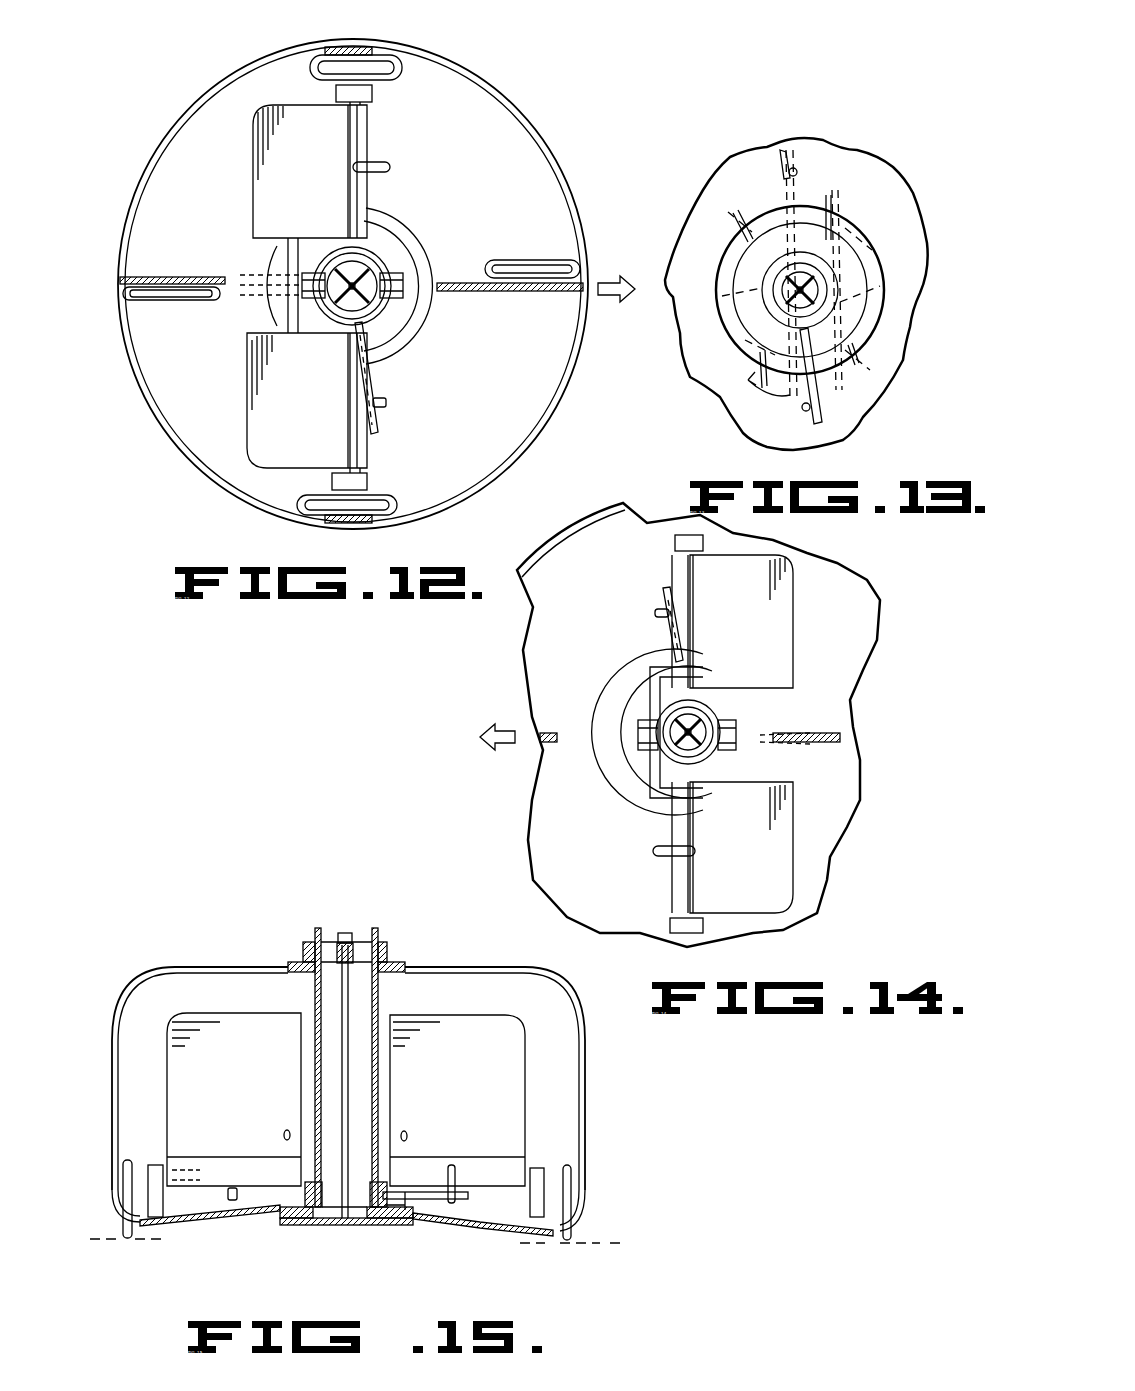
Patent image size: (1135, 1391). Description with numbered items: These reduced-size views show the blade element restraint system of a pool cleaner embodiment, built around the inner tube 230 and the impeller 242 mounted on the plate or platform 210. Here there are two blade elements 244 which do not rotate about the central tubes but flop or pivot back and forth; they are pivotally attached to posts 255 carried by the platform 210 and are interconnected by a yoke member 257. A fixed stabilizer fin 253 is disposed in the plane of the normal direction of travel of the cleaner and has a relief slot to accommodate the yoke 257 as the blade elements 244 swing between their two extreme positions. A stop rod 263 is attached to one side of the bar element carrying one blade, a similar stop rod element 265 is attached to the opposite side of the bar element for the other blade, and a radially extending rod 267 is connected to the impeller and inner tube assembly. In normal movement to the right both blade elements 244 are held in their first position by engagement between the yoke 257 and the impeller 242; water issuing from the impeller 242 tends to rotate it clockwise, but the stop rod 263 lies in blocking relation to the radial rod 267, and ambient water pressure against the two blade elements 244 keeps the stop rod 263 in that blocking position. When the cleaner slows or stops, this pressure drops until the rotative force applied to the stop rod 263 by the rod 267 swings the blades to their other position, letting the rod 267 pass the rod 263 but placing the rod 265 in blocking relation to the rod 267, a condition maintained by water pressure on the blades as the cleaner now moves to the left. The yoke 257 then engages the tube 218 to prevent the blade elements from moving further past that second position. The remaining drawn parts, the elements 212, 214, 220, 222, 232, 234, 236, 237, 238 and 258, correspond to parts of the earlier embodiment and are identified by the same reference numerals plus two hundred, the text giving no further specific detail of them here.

In FIG. 12, the plate or platform 210 is at (512, 407).
In FIG. 14, the plate or platform 210 is at (872, 655).
In FIG. 15, the plate or platform 210 is at (200, 1226).
In FIG. 12, the bracket slot 212 is at (555, 268).
In FIG. 15, the bracket slot 212 is at (575, 1230).
In FIG. 12, the housing rim slot 214 is at (372, 52).
In FIG. 15, the housing rim slot 214 is at (465, 970).
In FIG. 12, the tube 218 is at (358, 248).
In FIG. 15, the tube 218 is at (315, 930).
In FIG. 12, the arcuate guide 220 is at (336, 323).
In FIG. 14, the arcuate guide 220 is at (632, 740).
In FIG. 12, the clamp block 222 is at (395, 300).
In FIG. 14, the clamp block 222 is at (738, 750).
In FIG. 12, the inner tube 230 is at (372, 265).
In FIG. 13, the inner tube 230 is at (818, 300).
In FIG. 15, the inner tube 230 is at (314, 1058).
In FIG. 15, the fastener 232 is at (345, 930).
In FIG. 15, the base hub 234 is at (358, 1226).
In FIG. 15, the inner rod 236 is at (350, 1012).
In FIG. 15, the cap flange 237 is at (355, 935).
In FIG. 12, the spoked wheel 238 is at (340, 258).
In FIG. 14, the spoked wheel 238 is at (705, 715).
In FIG. 13, the impeller 242 is at (745, 335).
In FIG. 15, the impeller 242 is at (420, 1228).
In FIG. 12, the blade elements 244 is at (318, 172).
In FIG. 14, the blade elements 244 is at (785, 635).
In FIG. 15, the blade elements 244 is at (250, 1012).
In FIG. 12, the fixed stabilizer fin 253 is at (462, 280).
In FIG. 12, the posts 255 is at (374, 94).
In FIG. 14, the posts 255 is at (675, 543).
In FIG. 15, the posts 255 is at (150, 1168).
In FIG. 12, the yoke member 257 is at (286, 252).
In FIG. 14, the yoke member 257 is at (655, 793).
In FIG. 15, the yoke member 257 is at (287, 1128).
In FIG. 13, the base flange 258 is at (850, 240).
In FIG. 15, the base flange 258 is at (285, 1225).
In FIG. 12, the stop rod 263 is at (386, 402).
In FIG. 13, the stop rod 263 is at (805, 410).
In FIG. 14, the stop rod 263 is at (668, 858).
In FIG. 15, the stop rod 263 is at (457, 1172).
In FIG. 12, the stop rod element 265 is at (378, 162).
In FIG. 13, the stop rod element 265 is at (797, 170).
In FIG. 14, the stop rod element 265 is at (656, 614).
In FIG. 15, the stop rod element 265 is at (228, 1192).
In FIG. 12, the radially extending rod 267 is at (378, 425).
In FIG. 13, the radially extending rod 267 is at (818, 420).
In FIG. 14, the radially extending rod 267 is at (663, 592).
In FIG. 15, the radially extending rod 267 is at (416, 1192).